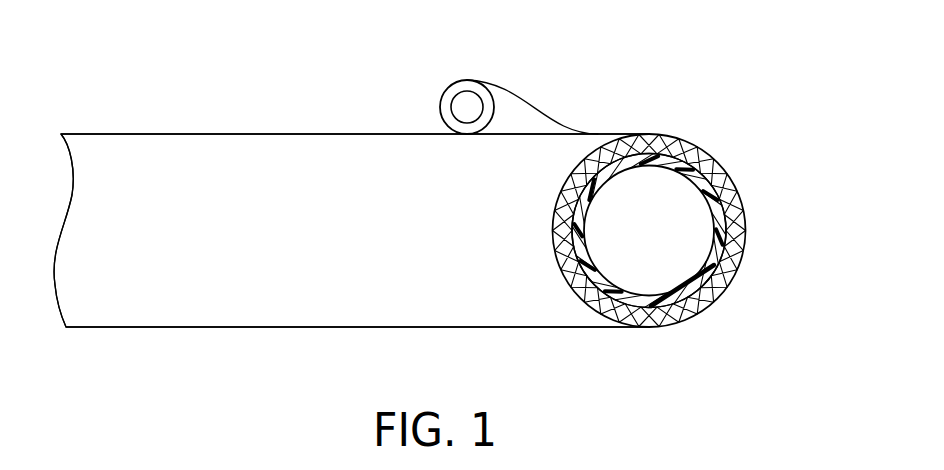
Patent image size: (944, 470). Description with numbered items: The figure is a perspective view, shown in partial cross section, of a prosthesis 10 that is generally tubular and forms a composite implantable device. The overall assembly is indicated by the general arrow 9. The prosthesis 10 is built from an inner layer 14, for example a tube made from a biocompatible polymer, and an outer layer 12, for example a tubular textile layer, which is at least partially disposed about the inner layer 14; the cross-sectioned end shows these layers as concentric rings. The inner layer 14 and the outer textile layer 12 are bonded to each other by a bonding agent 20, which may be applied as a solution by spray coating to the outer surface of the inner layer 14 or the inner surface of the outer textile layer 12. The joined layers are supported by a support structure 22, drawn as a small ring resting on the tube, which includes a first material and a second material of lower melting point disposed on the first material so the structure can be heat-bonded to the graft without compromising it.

The reinforced tubing assembly 9 is at (156, 121).
The prosthesis 10 is at (378, 291).
The outer layer 12 is at (715, 172).
The inner layer 14 is at (710, 256).
The bonding agent 20 is at (725, 220).
The support structure 22 is at (508, 95).